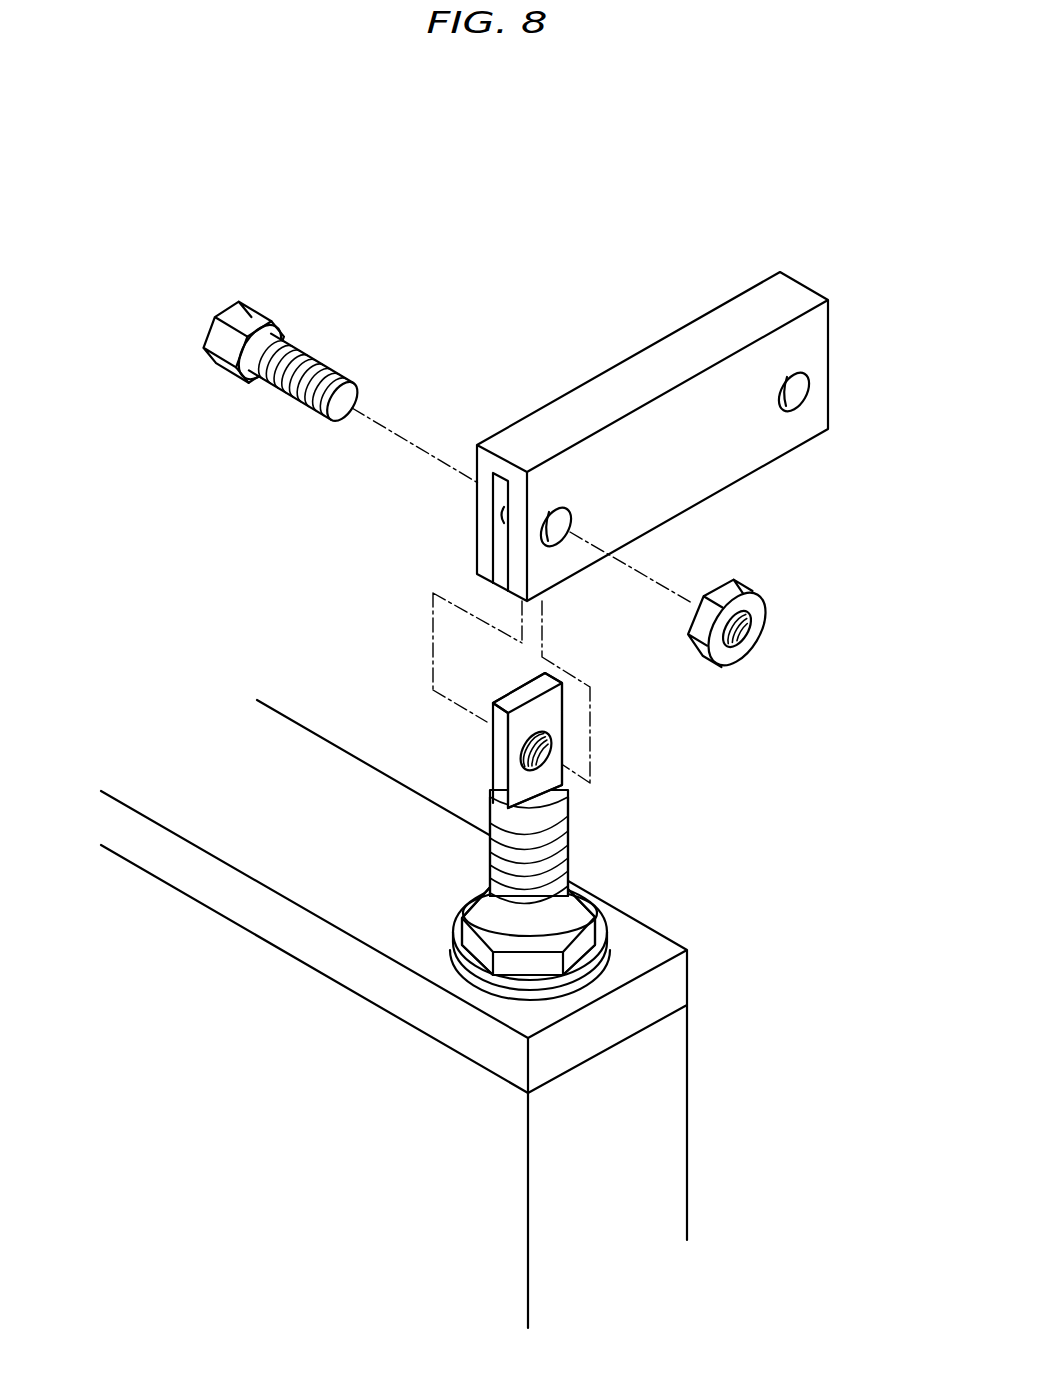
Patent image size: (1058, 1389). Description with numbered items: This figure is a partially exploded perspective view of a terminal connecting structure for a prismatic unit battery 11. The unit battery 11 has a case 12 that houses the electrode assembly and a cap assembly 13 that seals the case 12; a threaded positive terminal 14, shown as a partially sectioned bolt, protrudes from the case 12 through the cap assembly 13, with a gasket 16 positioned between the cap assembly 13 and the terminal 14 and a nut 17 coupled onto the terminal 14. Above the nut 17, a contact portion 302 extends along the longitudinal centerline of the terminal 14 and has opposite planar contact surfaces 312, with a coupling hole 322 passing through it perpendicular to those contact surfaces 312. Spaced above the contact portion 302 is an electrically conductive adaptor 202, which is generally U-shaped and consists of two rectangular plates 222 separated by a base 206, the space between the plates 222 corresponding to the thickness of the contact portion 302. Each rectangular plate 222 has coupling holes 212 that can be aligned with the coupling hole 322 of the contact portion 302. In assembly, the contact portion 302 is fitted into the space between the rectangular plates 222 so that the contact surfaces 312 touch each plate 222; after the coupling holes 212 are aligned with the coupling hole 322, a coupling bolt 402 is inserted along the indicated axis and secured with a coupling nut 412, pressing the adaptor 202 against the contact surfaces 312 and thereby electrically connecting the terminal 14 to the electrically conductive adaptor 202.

The unit battery 11 is at (453, 1014).
The case 12 is at (640, 1168).
The cap assembly 13 is at (600, 1028).
The positive terminal 14 is at (505, 866).
The gasket 16 is at (487, 990).
The nut 17 is at (480, 956).
The electrically conductive adaptor 202 is at (615, 433).
The base 206 is at (710, 342).
The coupling hole 212 is at (563, 518).
The rectangular plate 222 is at (504, 537).
The contact portion 302 is at (486, 731).
The planar contact surface 312 is at (478, 740).
The coupling hole 322 is at (535, 766).
The coupling bolt 402 is at (317, 353).
The coupling nut 412 is at (748, 640).